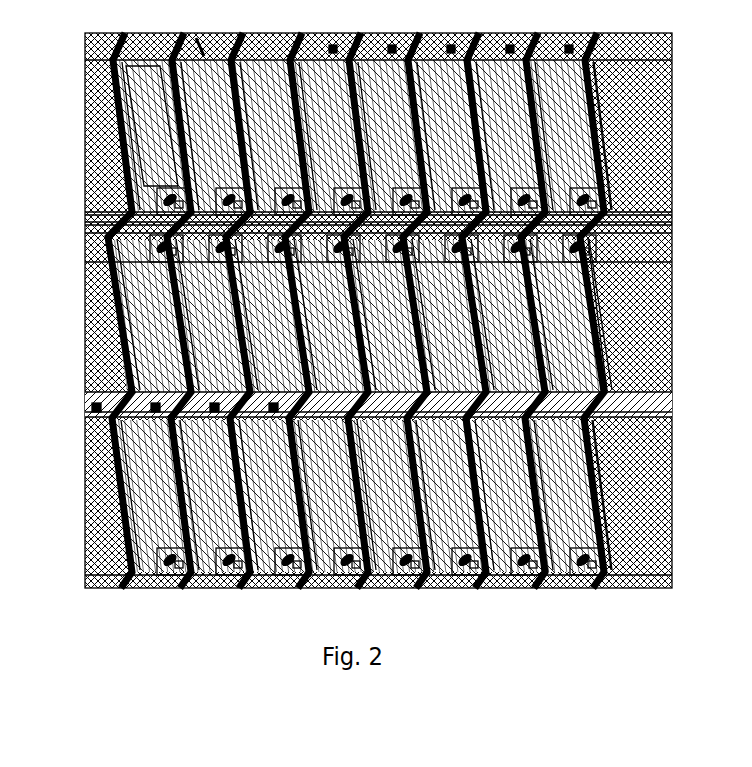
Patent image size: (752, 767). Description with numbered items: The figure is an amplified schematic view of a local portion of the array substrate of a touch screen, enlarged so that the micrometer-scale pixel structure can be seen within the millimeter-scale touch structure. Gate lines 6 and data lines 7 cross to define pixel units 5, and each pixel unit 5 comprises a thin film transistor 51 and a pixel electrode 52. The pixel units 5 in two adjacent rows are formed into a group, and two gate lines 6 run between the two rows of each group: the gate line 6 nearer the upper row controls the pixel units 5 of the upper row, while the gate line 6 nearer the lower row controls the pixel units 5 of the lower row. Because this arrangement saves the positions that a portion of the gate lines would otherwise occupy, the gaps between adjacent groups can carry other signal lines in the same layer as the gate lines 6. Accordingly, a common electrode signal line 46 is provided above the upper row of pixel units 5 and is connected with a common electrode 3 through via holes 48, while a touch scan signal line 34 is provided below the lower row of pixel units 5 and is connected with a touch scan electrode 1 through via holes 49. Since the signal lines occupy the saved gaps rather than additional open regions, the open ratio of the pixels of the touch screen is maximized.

The touch scan electrode 1 is at (92, 327).
The common electrode 3 is at (600, 77).
The pixel unit 5 is at (122, 80).
The gate line 6 is at (90, 220).
The data line 7 is at (200, 34).
The touch scan signal line 34 is at (92, 400).
The common electrode signal line 46 is at (95, 49).
The via hole 48 is at (335, 44).
The via hole 49 is at (92, 413).
The thin film transistor 51 is at (165, 200).
The pixel electrode 52 is at (132, 102).